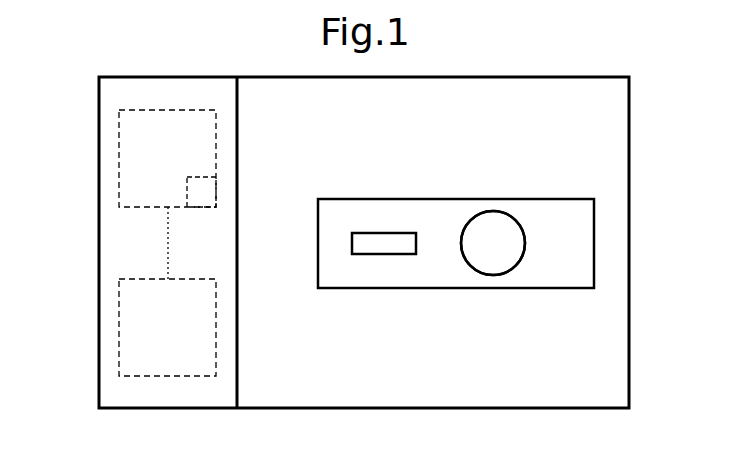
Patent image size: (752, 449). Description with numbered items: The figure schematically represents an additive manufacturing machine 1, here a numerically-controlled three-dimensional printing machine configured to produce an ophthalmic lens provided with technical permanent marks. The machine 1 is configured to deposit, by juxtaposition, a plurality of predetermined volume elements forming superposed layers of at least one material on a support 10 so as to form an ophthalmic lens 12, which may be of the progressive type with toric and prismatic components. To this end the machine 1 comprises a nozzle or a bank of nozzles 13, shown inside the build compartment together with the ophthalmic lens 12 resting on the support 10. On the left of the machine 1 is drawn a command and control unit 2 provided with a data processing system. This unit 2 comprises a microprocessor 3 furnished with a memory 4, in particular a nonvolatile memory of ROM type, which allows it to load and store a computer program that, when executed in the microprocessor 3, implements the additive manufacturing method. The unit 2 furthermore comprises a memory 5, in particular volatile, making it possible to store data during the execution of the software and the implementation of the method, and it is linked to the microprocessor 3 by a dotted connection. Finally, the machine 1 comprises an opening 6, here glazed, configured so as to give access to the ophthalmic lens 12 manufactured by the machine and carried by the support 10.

The additive manufacturing machine 1 is at (631, 144).
The command and control unit 2 is at (115, 394).
The microprocessor 3 is at (119, 152).
The memory 4 is at (205, 194).
The memory 5 is at (119, 333).
The opening 6 is at (582, 235).
The support 10 is at (517, 258).
The ophthalmic lens 12 is at (481, 258).
The nozzle or bank of nozzles 13 is at (380, 237).